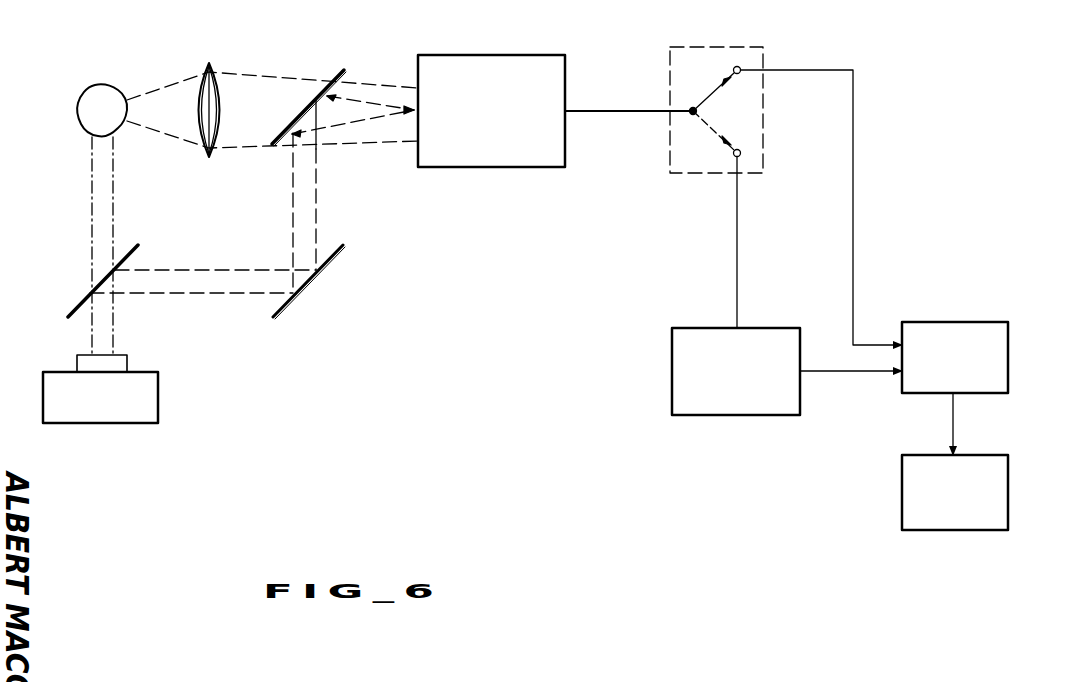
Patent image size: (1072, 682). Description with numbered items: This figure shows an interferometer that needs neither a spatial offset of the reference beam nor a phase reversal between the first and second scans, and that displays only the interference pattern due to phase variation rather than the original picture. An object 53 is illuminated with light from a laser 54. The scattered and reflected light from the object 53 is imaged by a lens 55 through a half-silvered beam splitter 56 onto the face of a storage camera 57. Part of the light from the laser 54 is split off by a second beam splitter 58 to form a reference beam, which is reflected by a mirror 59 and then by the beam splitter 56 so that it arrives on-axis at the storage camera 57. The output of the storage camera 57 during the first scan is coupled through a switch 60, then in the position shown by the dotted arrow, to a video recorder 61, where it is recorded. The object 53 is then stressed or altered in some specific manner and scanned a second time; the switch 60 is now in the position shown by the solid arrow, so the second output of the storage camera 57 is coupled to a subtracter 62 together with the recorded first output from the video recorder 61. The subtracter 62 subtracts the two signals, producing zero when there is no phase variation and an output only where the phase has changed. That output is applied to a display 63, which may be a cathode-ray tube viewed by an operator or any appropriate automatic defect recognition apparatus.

The object 53 is at (95, 85).
The laser 54 is at (158, 397).
The lens 55 is at (212, 73).
The beam splitter (half-silvered mirror) 56 is at (338, 70).
The storage camera 57 is at (487, 55).
The beam splitter 58 is at (72, 310).
The mirror 59 is at (287, 306).
The switch 60 is at (705, 47).
The video recorder 61 is at (672, 367).
The subtracter 62 is at (1007, 370).
The display 63 is at (1007, 503).